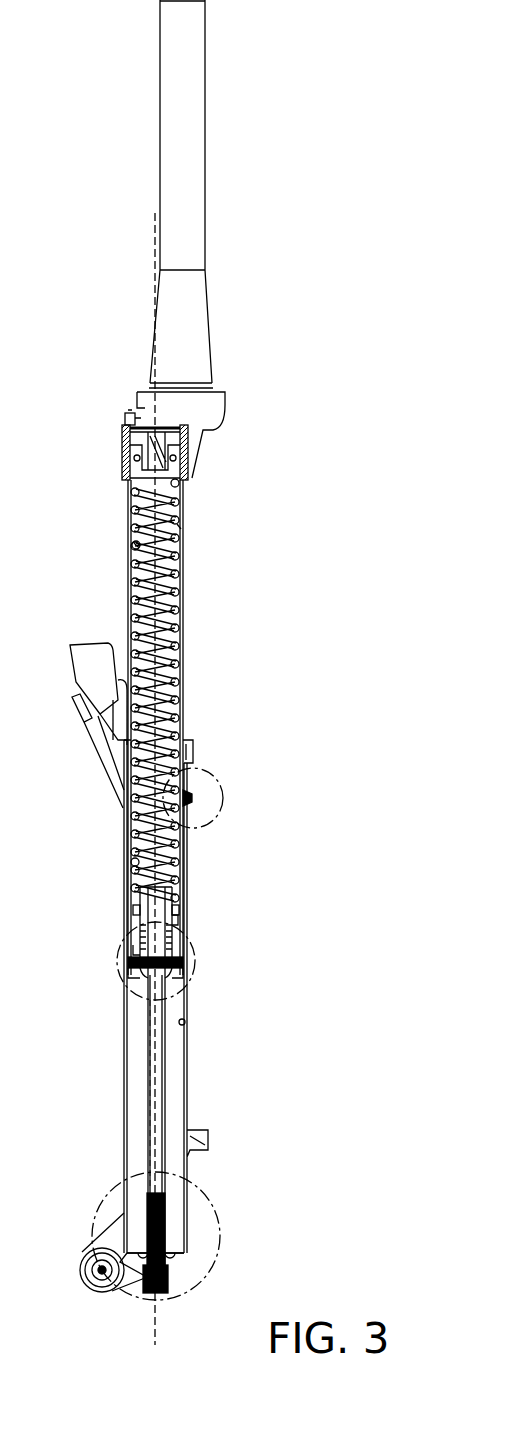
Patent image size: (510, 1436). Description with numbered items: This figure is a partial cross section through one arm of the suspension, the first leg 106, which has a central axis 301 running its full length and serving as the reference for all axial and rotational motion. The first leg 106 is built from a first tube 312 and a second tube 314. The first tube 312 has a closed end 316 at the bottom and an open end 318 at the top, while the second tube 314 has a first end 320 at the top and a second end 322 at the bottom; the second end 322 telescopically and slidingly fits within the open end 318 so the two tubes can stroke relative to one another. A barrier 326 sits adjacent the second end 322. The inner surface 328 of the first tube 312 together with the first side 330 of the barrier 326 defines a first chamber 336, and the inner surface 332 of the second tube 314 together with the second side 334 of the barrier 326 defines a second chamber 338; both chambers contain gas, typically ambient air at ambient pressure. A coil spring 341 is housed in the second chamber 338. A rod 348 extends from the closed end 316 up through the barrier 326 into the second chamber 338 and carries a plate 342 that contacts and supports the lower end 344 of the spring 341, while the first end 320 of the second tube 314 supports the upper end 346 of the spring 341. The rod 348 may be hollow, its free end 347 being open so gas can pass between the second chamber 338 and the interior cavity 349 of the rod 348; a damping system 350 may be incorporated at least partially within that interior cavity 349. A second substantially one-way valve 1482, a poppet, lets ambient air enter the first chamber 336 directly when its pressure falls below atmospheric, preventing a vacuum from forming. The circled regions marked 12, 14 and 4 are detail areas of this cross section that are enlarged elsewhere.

The first leg 106 is at (197, 495).
The first end of the second tube 320 is at (140, 420).
The upper end of the spring 346 is at (145, 466).
The second tube 314 is at (183, 648).
The second chamber 338 is at (157, 562).
The coil spring 341 is at (178, 528).
The inner surface of the second tube 332 is at (133, 542).
The first tube 312 is at (187, 1097).
The first chamber 336 is at (136, 1088).
The open end of the first tube 318 is at (196, 744).
The second substantially one-way valve 1482 is at (200, 797).
The detail region 14 is at (223, 799).
The free end of the hollow rod 347 is at (133, 863).
The lower end of the spring 344 is at (190, 890).
The plate 342 is at (173, 924).
The second side of the barrier 334 is at (133, 952).
The detail region 12 is at (197, 960).
The second end of the second tube 322 is at (187, 972).
The barrier 326 is at (126, 972).
The first side of the barrier 330 is at (186, 982).
The inner surface of the first tube 328 is at (185, 1022).
The rod 348 is at (163, 1050).
The interior cavity of the hollow rod 349 is at (153, 1041).
The damping system 350 is at (195, 1213).
The detail region 4 is at (220, 1223).
The closed end of the first tube 316 is at (173, 1266).
The central axis 301 is at (153, 1317).